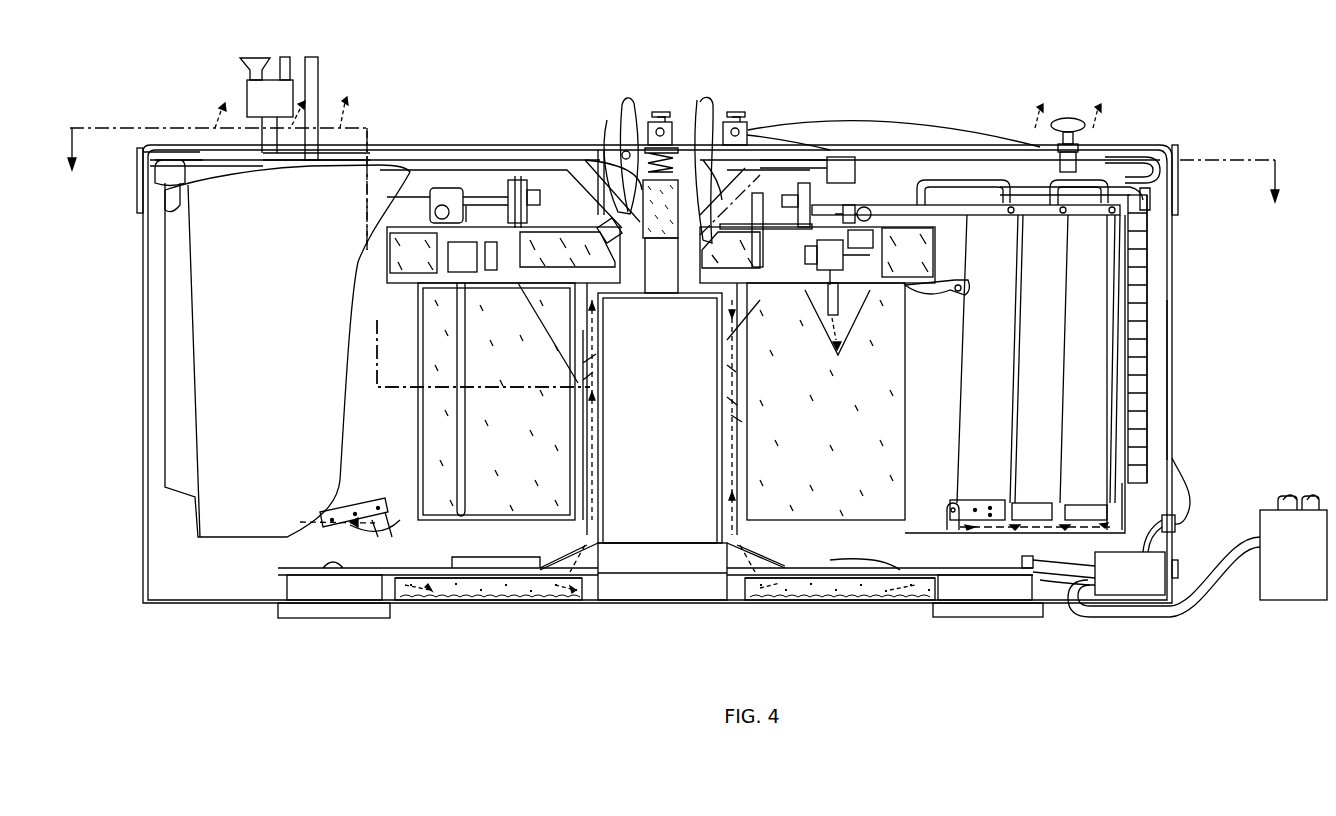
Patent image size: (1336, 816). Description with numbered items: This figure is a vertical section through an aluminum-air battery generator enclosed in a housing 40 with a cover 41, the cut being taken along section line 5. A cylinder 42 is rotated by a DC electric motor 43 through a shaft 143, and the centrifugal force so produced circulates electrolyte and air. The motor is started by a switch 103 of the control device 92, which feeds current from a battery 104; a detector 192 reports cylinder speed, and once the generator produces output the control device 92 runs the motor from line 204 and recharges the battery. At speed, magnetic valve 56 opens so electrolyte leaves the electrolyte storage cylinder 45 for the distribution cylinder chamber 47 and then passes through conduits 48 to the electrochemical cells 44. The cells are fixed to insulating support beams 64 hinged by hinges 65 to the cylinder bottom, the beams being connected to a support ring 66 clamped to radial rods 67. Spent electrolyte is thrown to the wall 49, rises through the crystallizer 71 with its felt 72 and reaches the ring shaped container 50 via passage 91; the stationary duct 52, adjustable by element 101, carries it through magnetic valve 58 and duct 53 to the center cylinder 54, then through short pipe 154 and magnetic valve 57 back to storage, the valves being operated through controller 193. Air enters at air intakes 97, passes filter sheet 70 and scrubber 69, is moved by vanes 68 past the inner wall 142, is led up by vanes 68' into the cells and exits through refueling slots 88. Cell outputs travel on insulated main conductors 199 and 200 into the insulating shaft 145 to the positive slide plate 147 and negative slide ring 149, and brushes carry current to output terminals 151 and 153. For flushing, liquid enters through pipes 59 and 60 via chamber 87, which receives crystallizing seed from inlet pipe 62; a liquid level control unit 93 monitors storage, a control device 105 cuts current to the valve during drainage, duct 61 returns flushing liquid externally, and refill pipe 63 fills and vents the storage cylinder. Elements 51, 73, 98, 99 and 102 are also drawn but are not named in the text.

The section line 5- 5 is at (674, 257).
The housing 40 is at (1172, 392).
The cover 41 is at (1150, 148).
The cylinder 42 is at (255, 458).
The DC electric motor 43 is at (647, 441).
The electrochemical cells 44 is at (1115, 442).
The electrolyte storage cylinder 45 is at (425, 470).
The distribution cylinder chamber 47 is at (660, 255).
The conduits 48 is at (1055, 182).
The wall 49 is at (1125, 507).
The ring shaped container 50 is at (152, 158).
The filter bar 51 is at (463, 460).
The duct 52 is at (1112, 160).
The duct 53 is at (789, 160).
The center cylinder 54 is at (640, 252).
The magnetic valve 56 is at (462, 257).
The magnetic valve 57 is at (843, 262).
The magnetic valve 58 is at (807, 170).
The pipe 59 is at (284, 57).
The pipe 60 is at (455, 160).
The duct 61 is at (318, 70).
The inlet pipe 62 is at (250, 57).
The refill pipe 63 is at (755, 205).
The insulating support beam 64 is at (992, 215).
The hinges 65 is at (950, 508).
The support ring 66 is at (447, 206).
The radial rods 67 is at (410, 204).
The vanes 68 is at (689, 425).
The vanes 68' is at (1035, 497).
The scrubber 69 is at (535, 628).
The filter sheet 70 is at (565, 600).
The crystallizer 71 is at (1147, 318).
The felt 72 is at (1147, 267).
The contact finger 73 is at (625, 200).
The chamber 87 is at (308, 120).
The refueling slots 88 is at (222, 128).
The passage 91 is at (158, 195).
The control device 92 is at (1099, 573).
The liquid level control unit 93 is at (838, 355).
The air intakes 97 is at (445, 600).
The air duct 98 is at (590, 500).
The valve 99 is at (600, 224).
The element 101 is at (1065, 118).
The cylinder 102 is at (492, 240).
The switch 103 is at (1178, 569).
The battery 104 is at (1262, 522).
The control device 105 is at (491, 270).
The inner wall 142 is at (727, 340).
The shaft 143 is at (660, 270).
The shaft 145 is at (705, 195).
The positive slide plate 147 is at (650, 148).
The negative slide ring 149 is at (620, 205).
The output terminal 151 is at (668, 112).
The output terminal 153 is at (740, 112).
The short pipe 154 is at (812, 252).
The detector 192 is at (470, 560).
The controller 193 is at (862, 230).
The insulated main conductor 199 is at (379, 308).
The insulated main conductor 200 is at (945, 298).
The line 204 is at (1190, 505).